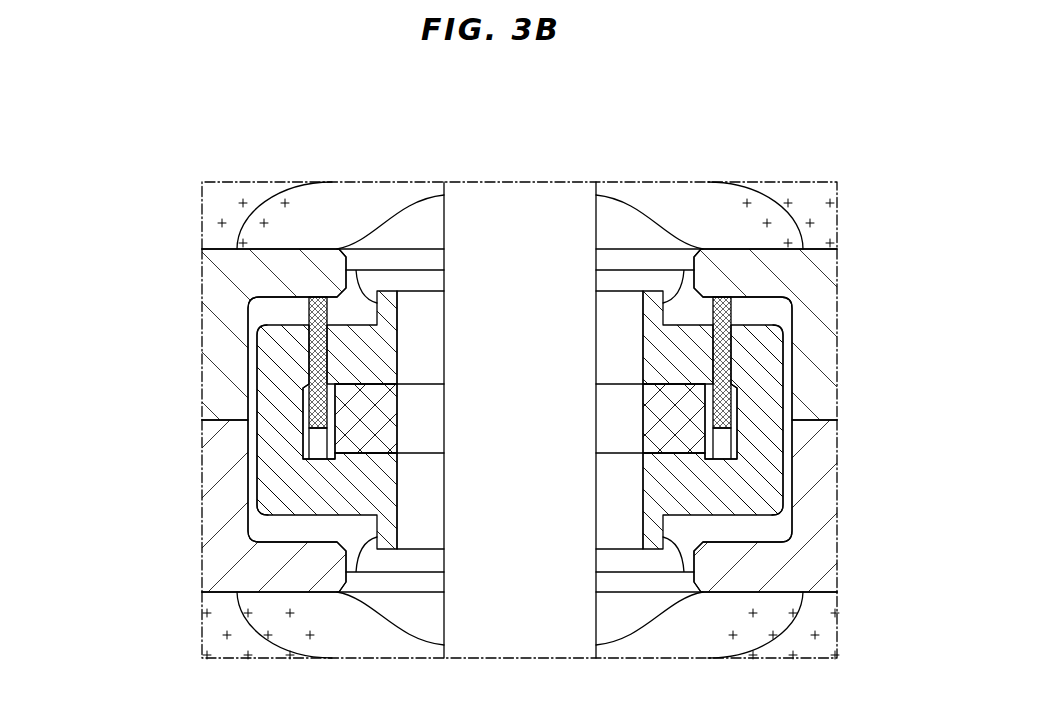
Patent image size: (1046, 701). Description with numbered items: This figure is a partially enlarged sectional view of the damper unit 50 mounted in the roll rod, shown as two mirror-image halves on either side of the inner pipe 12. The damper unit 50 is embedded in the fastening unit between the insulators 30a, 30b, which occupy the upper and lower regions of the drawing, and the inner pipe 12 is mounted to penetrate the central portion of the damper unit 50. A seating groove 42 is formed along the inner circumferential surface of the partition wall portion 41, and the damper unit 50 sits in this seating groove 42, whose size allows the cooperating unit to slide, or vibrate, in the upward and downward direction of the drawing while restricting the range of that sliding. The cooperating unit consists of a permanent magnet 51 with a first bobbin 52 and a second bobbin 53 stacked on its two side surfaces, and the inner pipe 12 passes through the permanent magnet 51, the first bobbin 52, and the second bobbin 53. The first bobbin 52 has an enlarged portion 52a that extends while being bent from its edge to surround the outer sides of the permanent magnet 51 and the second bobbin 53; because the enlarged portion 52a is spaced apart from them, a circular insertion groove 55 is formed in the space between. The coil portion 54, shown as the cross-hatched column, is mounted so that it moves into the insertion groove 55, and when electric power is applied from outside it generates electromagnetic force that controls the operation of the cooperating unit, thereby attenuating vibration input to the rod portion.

The inner pipe 12 is at (527, 220).
The insulator 30a is at (240, 625).
The insulator 30b is at (242, 222).
The partition wall portion 41 is at (738, 573).
The seating groove 42 is at (735, 537).
The damper unit 50 is at (780, 291).
The permanent magnet 51 is at (690, 423).
The first bobbin 52 is at (705, 485).
The enlarged portion 52a is at (767, 383).
The second bobbin 53 is at (690, 358).
The coil portion 54 is at (318, 358).
The insertion groove 55 is at (315, 437).